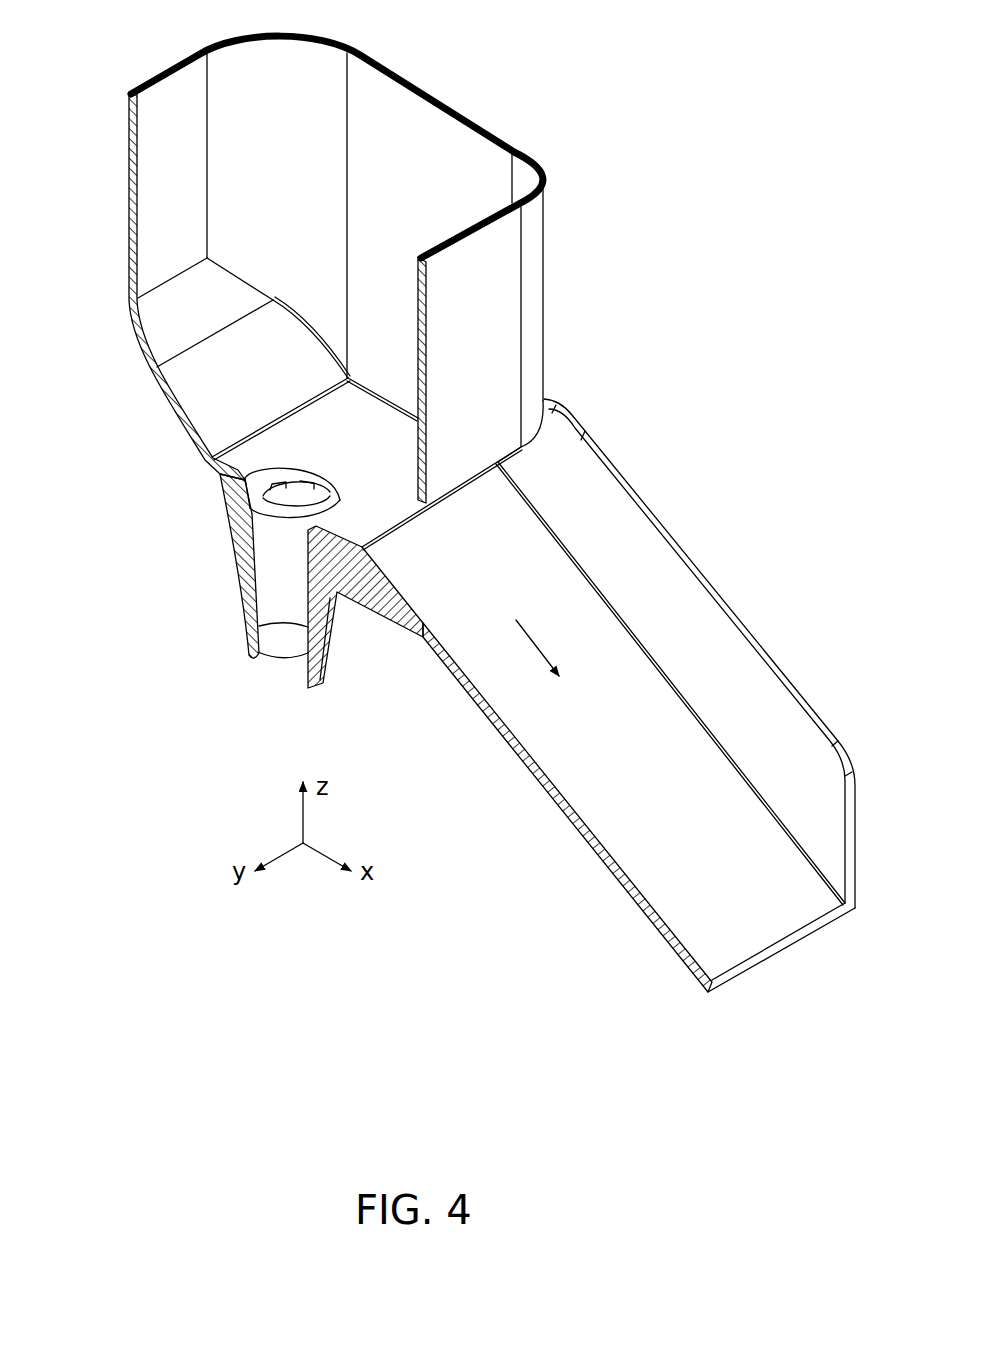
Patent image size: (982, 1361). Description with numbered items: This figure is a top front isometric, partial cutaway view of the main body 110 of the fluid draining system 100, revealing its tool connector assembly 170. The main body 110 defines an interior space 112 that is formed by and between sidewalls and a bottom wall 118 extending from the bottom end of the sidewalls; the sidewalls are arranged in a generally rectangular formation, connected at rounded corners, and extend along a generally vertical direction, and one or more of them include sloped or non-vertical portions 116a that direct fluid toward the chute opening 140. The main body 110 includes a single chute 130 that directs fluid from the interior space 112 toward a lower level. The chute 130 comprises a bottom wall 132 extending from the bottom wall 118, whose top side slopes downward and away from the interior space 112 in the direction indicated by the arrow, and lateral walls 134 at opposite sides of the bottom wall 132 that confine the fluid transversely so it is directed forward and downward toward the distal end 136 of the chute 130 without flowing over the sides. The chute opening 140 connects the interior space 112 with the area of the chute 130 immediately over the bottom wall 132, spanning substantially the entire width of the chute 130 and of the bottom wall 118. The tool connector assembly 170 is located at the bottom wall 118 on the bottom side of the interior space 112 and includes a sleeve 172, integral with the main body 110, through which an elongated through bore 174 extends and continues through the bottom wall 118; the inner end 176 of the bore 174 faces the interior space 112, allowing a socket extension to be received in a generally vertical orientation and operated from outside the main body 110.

The fluid draining system 100 is at (571, 100).
The main body 110 is at (557, 167).
The interior space 112 is at (237, 189).
The sloped or non-vertical portions 116a is at (368, 327).
The bottom wall 118 is at (307, 420).
The chute 130 is at (681, 507).
The bottom wall 132 is at (790, 915).
The lateral walls 134 is at (750, 630).
The distal end 136 is at (752, 962).
The chute opening 140 is at (402, 524).
The tool connector assembly 170 is at (177, 563).
The sleeve 172 is at (333, 660).
The through bore 174 is at (279, 579).
The inner end 176 is at (288, 461).